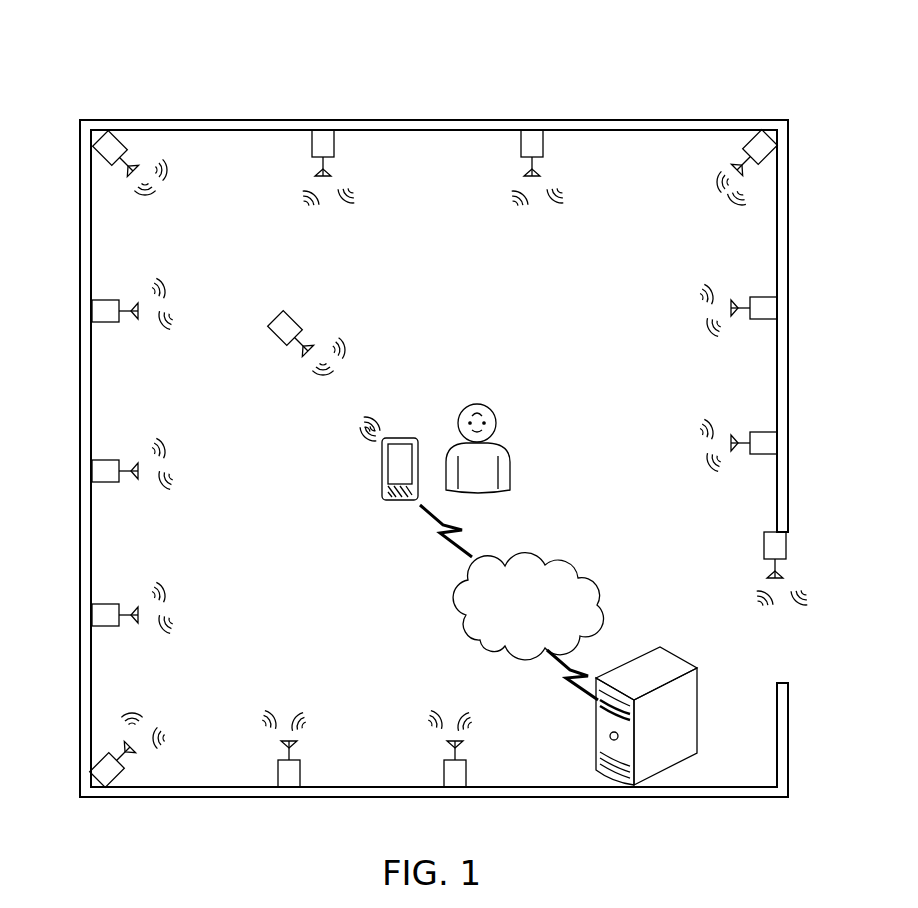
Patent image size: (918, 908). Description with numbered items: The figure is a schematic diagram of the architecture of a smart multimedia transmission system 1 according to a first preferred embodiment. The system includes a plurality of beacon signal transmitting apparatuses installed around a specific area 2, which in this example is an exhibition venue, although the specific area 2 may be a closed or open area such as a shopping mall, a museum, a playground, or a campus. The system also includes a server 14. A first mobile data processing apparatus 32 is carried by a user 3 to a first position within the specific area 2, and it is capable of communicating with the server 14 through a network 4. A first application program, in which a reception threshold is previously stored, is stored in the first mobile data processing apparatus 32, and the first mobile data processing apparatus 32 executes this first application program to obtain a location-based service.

The smart multimedia transmission system 1 is at (421, 66).
The specific area 2 is at (668, 120).
The user 3 is at (490, 405).
The network 4 is at (563, 575).
The server 14 is at (662, 668).
The first mobile data processing apparatus 32 is at (412, 438).